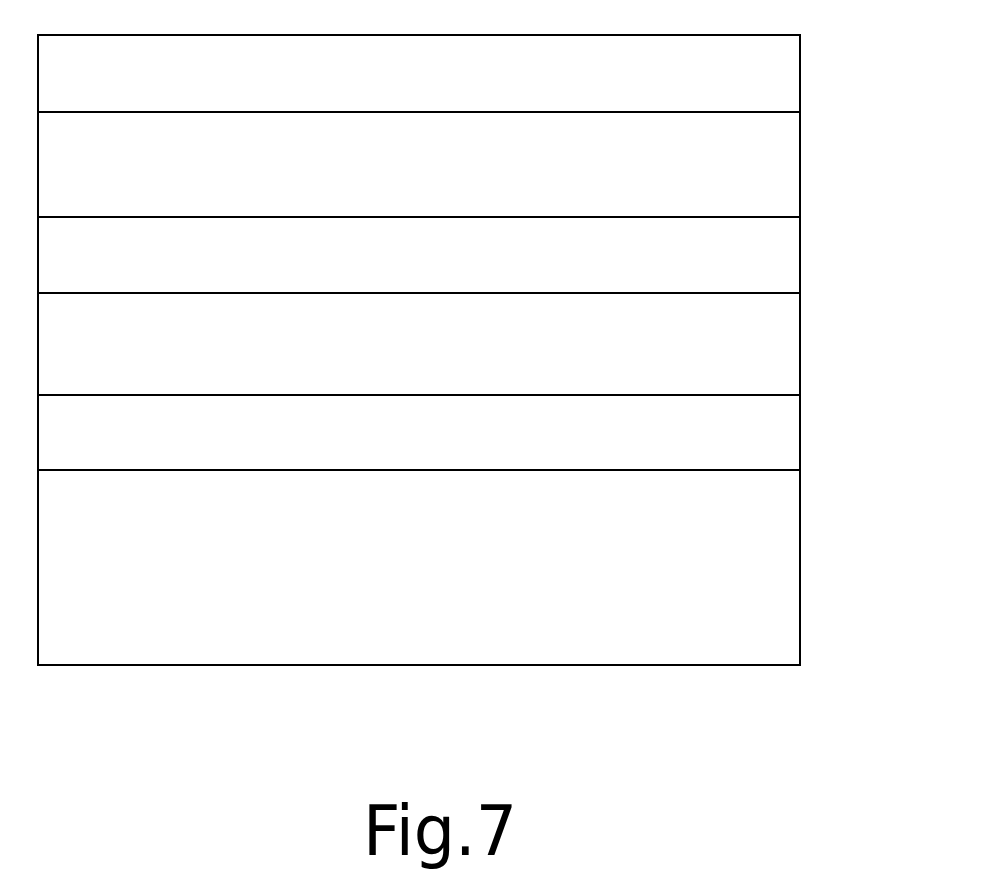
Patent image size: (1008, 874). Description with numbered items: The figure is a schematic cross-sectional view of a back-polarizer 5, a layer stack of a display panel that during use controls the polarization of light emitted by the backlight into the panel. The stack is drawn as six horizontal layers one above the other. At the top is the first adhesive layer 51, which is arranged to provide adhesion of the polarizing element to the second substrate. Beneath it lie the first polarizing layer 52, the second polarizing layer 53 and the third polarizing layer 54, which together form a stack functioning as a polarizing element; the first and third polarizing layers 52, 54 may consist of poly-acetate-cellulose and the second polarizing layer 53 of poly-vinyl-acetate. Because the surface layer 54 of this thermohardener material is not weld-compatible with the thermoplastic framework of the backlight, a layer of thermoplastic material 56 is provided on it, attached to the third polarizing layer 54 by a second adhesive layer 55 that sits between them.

The back-polarizer 5 is at (474, 350).
The first adhesive layer 51 is at (440, 89).
The first polarizing layer 52 is at (440, 179).
The second polarizing layer 53 is at (440, 267).
The third polarizing layer 54 is at (440, 359).
The second adhesive layer 55 is at (440, 447).
The layer of thermoplastic material 56 is at (440, 582).